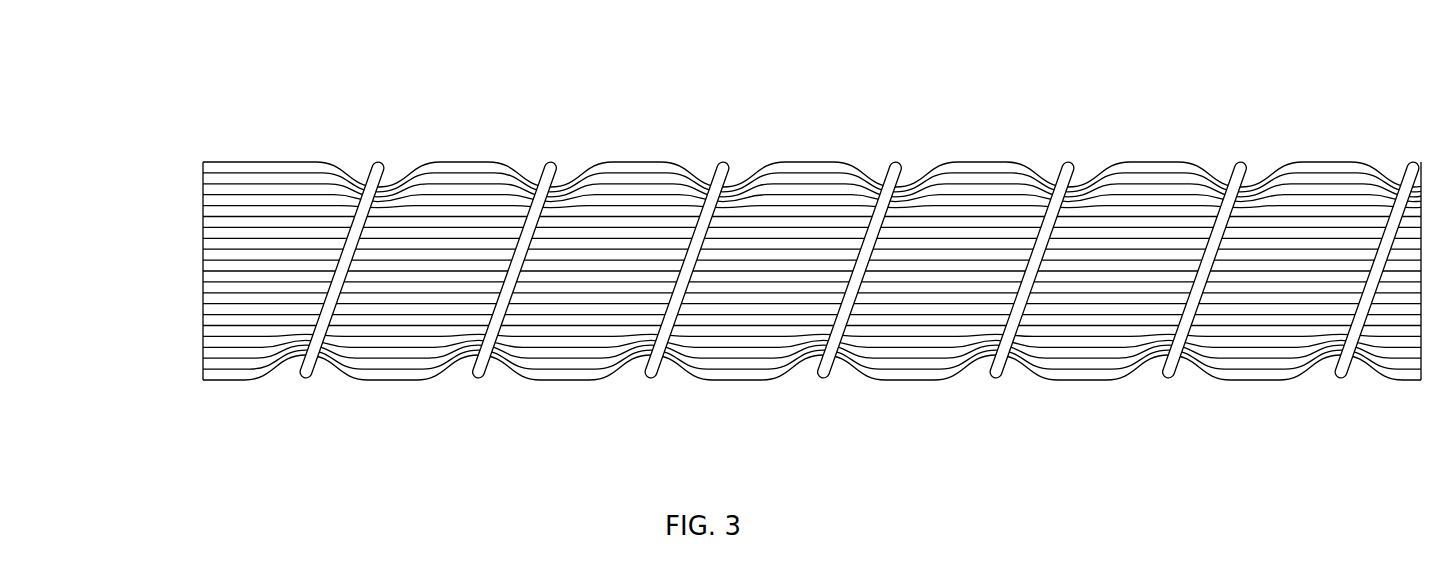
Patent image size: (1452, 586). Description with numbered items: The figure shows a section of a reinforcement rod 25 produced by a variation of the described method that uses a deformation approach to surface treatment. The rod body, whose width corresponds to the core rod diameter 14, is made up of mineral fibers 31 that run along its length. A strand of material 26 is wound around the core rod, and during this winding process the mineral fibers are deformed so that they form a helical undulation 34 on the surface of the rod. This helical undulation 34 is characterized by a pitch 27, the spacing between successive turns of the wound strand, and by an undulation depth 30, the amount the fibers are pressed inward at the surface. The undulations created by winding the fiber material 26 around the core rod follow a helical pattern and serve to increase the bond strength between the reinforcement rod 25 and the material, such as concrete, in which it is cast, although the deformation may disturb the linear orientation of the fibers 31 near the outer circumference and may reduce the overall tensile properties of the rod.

The core rod diameter 14 is at (132, 470).
The reinforcement rod 25 is at (1182, 245).
The strand of material 26 is at (885, 217).
The pitch 27 is at (300, 130).
The depth 30 is at (732, 267).
The fibers 31 is at (1087, 188).
The helical undulation 34 is at (908, 180).